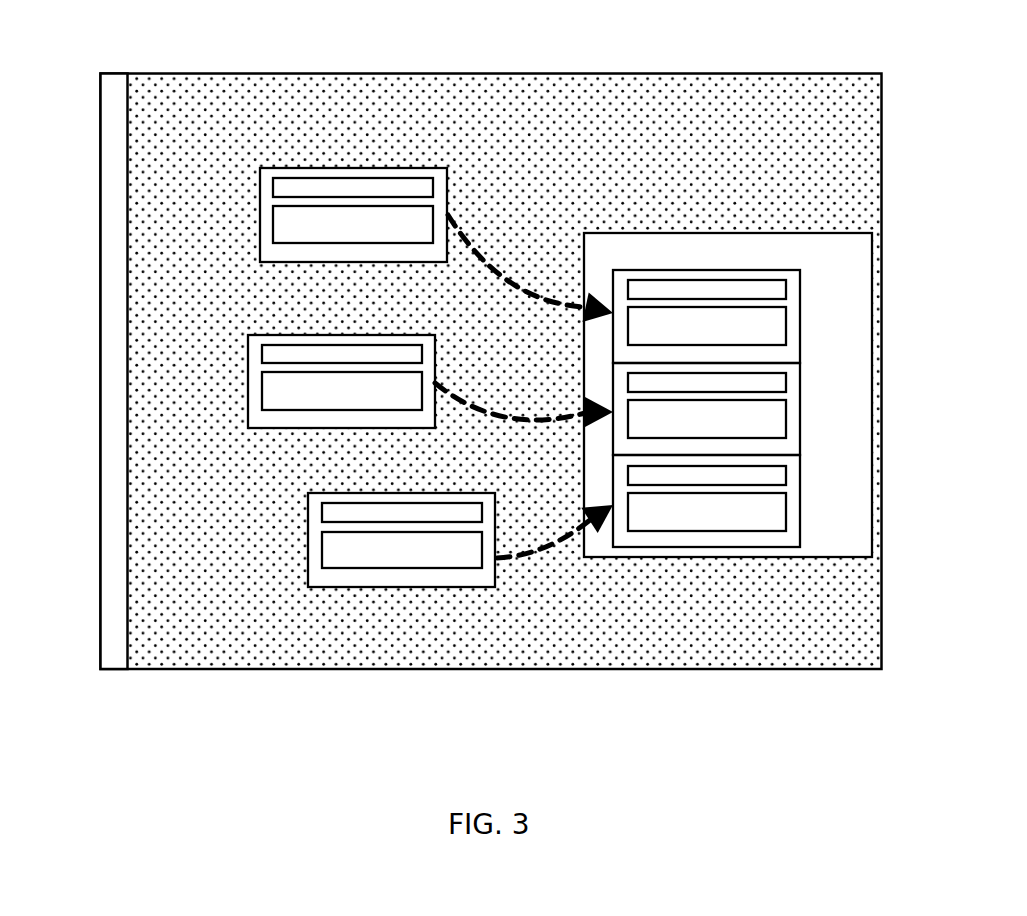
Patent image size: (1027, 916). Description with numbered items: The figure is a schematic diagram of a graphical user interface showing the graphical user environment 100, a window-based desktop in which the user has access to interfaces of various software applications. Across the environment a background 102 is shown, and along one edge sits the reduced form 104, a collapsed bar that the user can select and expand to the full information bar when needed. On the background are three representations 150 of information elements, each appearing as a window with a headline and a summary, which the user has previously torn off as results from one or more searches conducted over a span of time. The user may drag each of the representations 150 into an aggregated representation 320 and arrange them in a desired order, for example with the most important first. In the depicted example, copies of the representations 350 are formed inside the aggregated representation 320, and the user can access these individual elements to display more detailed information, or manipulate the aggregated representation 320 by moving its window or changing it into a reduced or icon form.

The graphical user environment 100 is at (721, 73).
The background 102 is at (249, 112).
The reduced form 104 is at (118, 93).
The representation 150 is at (381, 168).
The aggregated representation 320 is at (660, 558).
The copies of the representations 350 is at (800, 335).